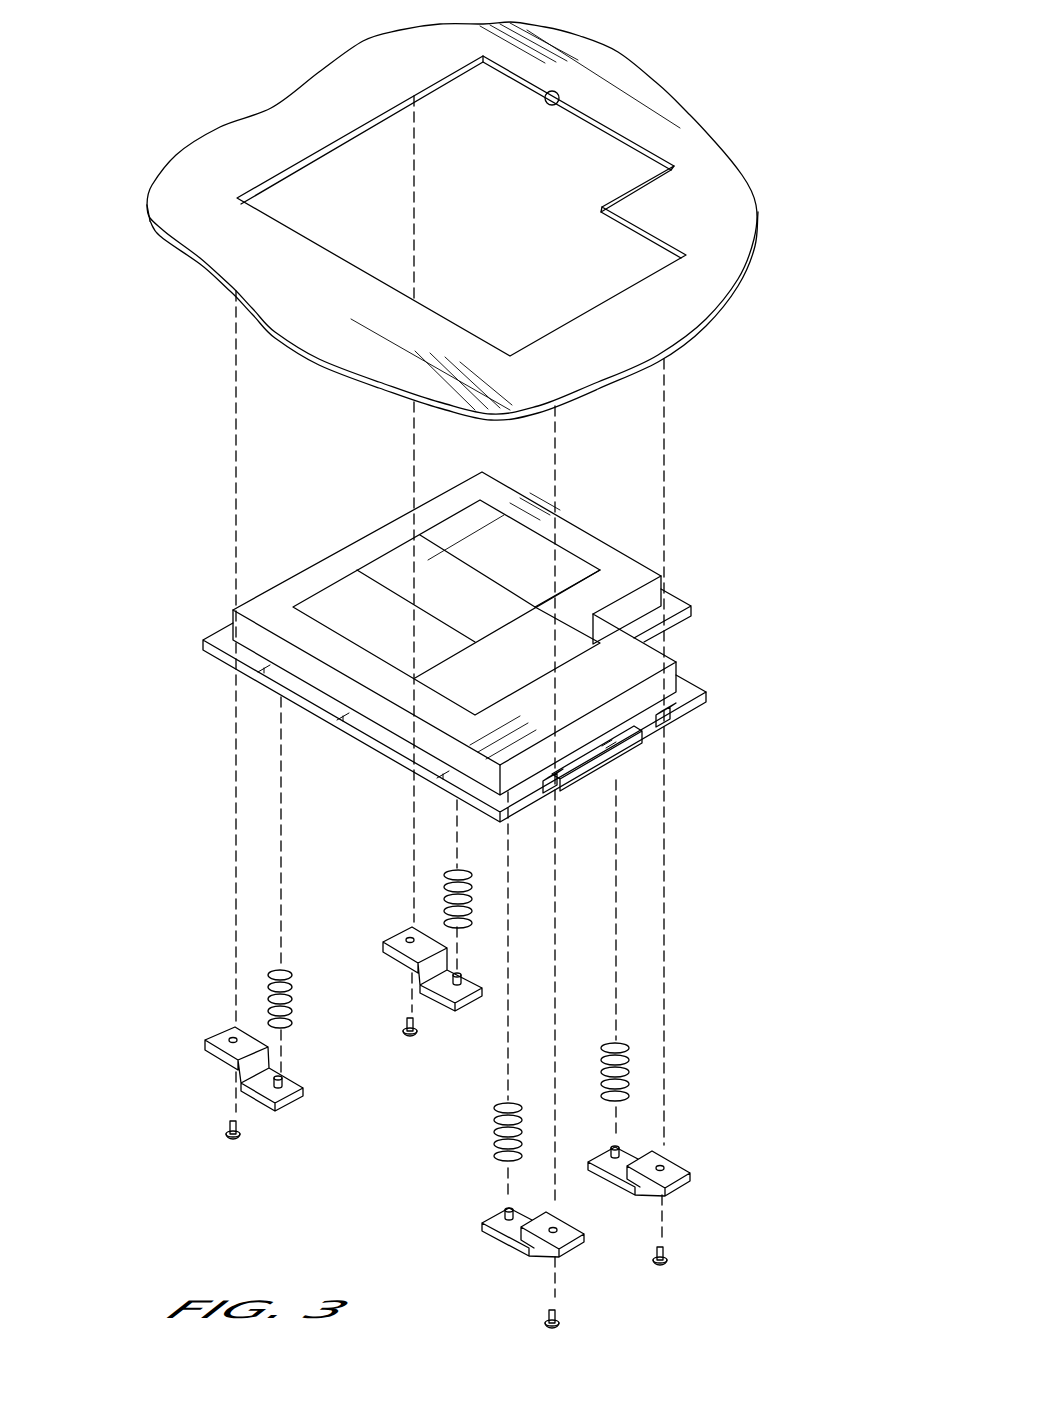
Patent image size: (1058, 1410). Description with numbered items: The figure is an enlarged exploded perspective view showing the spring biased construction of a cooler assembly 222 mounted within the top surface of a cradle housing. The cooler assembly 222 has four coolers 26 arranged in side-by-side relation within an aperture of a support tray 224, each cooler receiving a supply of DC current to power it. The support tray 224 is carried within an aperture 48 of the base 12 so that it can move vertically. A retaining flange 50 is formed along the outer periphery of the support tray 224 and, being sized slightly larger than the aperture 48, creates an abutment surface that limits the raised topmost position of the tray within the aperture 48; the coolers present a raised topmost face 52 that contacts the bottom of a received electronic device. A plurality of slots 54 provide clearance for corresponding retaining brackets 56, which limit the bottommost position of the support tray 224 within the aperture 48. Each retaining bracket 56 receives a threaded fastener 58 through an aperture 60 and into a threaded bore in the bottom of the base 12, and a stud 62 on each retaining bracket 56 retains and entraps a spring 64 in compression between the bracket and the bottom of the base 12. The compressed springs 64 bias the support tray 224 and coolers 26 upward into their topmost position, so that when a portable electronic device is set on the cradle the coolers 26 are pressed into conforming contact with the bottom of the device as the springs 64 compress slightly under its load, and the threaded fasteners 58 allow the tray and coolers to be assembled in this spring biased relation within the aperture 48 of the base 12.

The base 12 is at (710, 122).
The aperture 48 is at (543, 92).
The cooler assembly 222 is at (96, 270).
The support tray 224 is at (281, 594).
The cooler 26 is at (541, 551).
The raised topmost face 52 is at (628, 566).
The retaining flange 50 is at (675, 605).
The slot 54 is at (670, 722).
The retaining bracket 56 is at (217, 1057).
The threaded fastener 58 is at (240, 1137).
The aperture 60 is at (233, 1037).
The stud 62 is at (285, 1080).
The spring 64 is at (295, 983).